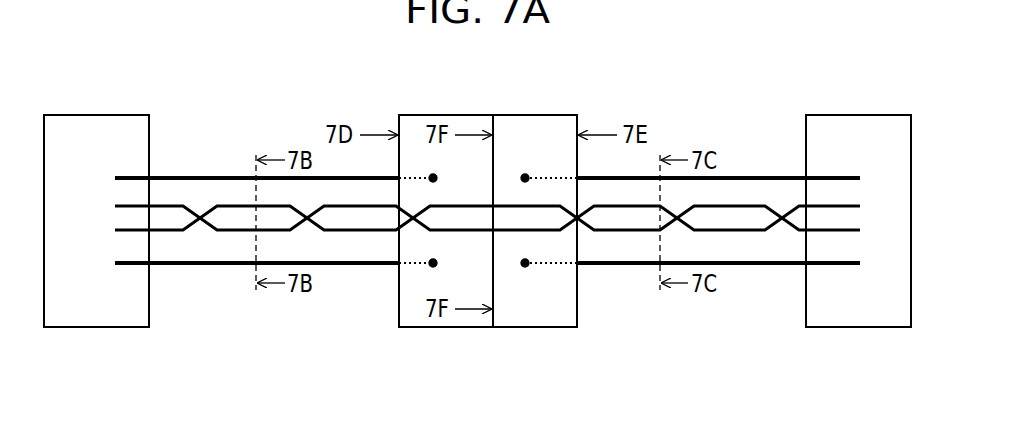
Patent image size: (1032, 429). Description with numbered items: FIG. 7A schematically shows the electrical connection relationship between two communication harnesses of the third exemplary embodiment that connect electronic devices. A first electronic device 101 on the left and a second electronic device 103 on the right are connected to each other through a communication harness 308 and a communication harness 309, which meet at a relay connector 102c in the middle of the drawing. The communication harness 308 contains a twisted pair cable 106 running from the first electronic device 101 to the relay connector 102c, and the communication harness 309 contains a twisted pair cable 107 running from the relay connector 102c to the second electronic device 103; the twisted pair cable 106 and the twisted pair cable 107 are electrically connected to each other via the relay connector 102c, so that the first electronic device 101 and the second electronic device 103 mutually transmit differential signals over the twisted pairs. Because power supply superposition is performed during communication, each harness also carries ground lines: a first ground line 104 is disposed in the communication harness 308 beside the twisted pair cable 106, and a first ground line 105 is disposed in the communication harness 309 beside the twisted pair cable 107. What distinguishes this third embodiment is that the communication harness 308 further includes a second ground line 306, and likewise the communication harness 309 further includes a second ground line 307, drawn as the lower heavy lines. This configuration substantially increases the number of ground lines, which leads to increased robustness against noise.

The first electronic device 101 is at (100, 115).
The relay connector 102c is at (530, 115).
The second electronic device 103 is at (860, 115).
The first ground line 104 is at (162, 178).
The first ground line 105 is at (770, 178).
The twisted pair cable 106 is at (230, 232).
The twisted pair cable 107 is at (620, 232).
The second ground line 306 is at (345, 265).
The second ground line 307 is at (757, 265).
The communication harness 308 is at (247, 318).
The communication harness 309 is at (710, 318).